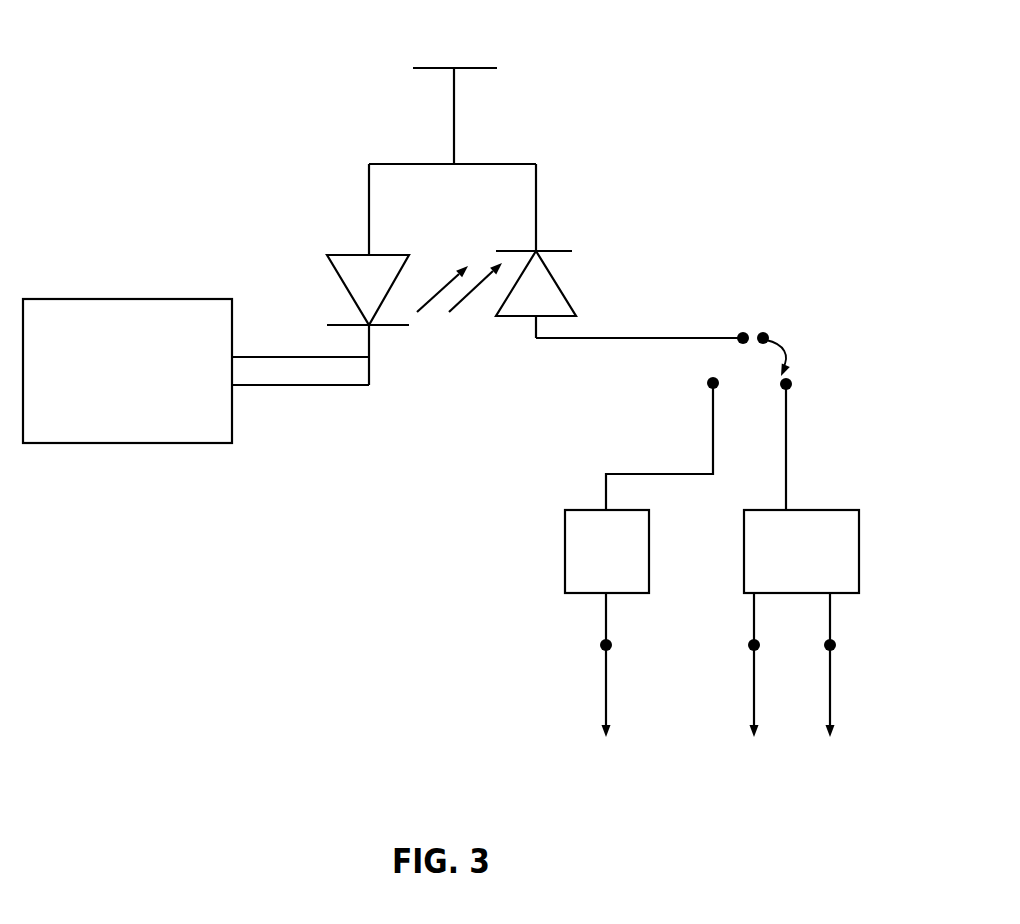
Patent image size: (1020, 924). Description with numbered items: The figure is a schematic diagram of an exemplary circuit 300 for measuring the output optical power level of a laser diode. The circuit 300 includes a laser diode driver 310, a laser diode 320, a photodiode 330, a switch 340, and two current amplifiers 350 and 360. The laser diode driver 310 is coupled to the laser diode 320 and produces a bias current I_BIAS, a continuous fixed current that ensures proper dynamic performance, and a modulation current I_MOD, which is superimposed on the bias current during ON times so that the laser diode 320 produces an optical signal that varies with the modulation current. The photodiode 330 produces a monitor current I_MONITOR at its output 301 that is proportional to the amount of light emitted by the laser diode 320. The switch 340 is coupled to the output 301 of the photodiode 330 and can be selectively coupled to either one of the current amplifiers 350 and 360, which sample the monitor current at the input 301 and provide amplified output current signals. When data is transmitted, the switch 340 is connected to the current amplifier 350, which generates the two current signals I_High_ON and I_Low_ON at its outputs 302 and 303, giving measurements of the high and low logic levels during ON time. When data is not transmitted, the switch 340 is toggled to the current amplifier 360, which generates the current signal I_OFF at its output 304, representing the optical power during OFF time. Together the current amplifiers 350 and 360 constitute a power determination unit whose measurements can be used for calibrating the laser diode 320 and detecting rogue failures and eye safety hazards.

The circuit 300 is at (755, 35).
The output of the photodiode 301 is at (740, 334).
The output of the current amplifier 302 is at (824, 647).
The output of the current amplifier 303 is at (748, 647).
The output of the current amplifier 304 is at (600, 647).
The laser diode driver 310 is at (60, 299).
The laser diode 320 is at (350, 254).
The photodiode 330 is at (548, 251).
The switch 340 is at (775, 352).
The current amplifier 350 is at (815, 510).
The current amplifier 360 is at (577, 510).